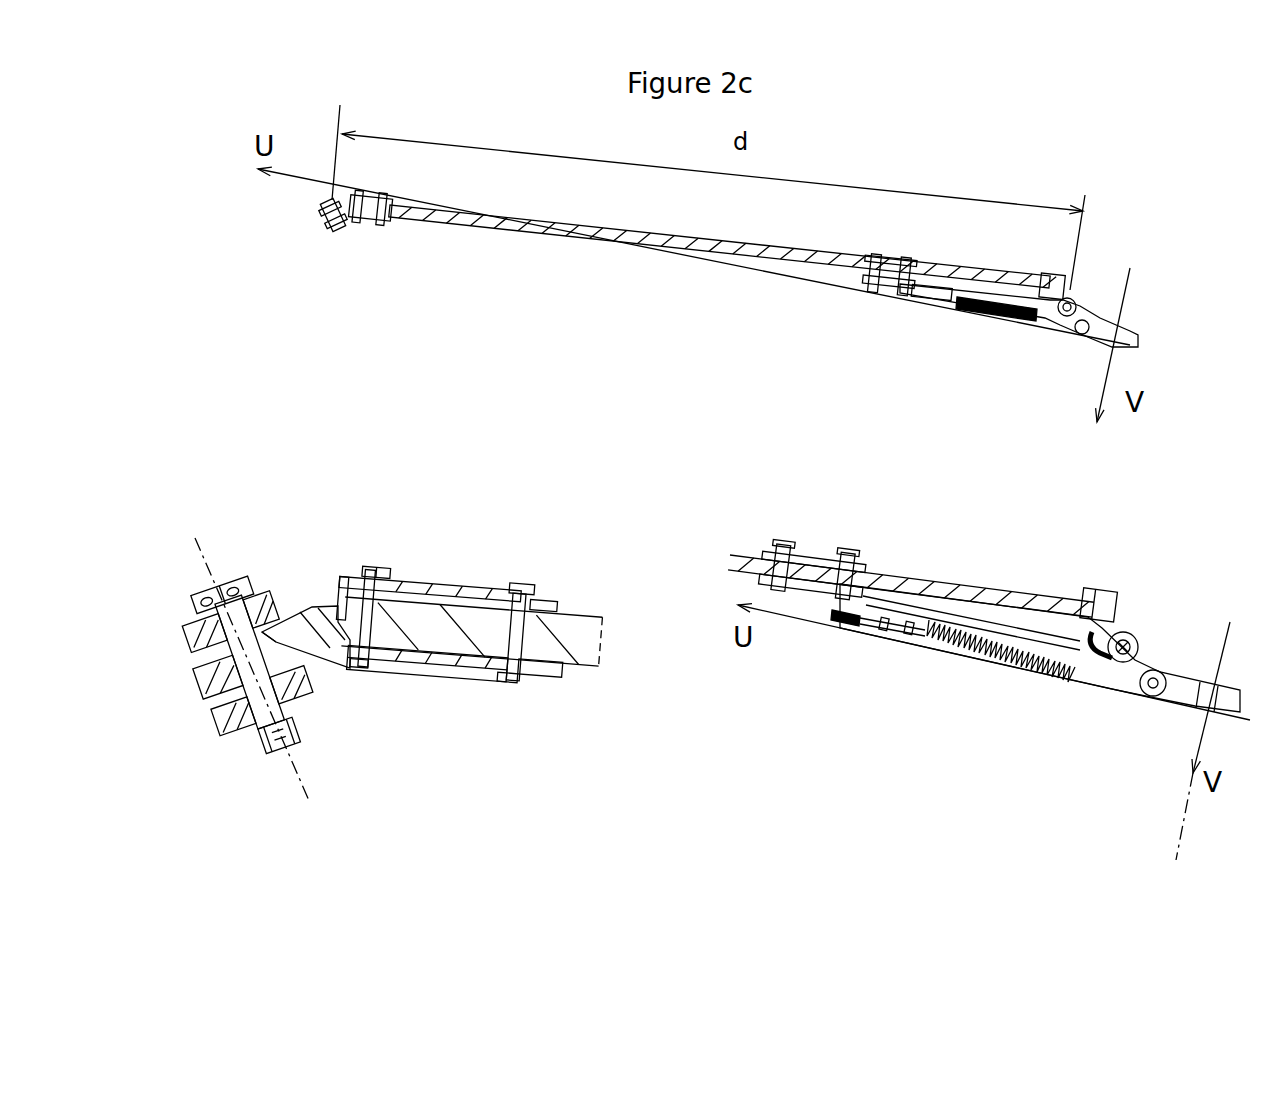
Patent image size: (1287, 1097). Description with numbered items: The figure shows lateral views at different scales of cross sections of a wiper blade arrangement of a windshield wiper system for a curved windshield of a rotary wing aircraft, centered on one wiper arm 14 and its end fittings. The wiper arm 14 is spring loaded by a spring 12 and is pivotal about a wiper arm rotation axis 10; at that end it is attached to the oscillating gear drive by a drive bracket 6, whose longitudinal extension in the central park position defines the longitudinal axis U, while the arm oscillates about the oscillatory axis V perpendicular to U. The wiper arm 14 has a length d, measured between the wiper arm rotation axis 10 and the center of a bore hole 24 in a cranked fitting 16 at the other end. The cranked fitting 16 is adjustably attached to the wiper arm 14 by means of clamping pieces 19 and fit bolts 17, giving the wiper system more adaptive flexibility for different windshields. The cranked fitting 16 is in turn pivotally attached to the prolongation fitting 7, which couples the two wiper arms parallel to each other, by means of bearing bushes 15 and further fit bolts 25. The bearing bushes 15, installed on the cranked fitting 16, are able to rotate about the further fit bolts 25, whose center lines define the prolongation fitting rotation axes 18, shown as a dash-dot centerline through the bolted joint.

The drive bracket 6 is at (1135, 675).
The prolongation fitting 7 is at (227, 737).
The wiper arm rotation axis 10 is at (1052, 312).
The spring 12 is at (1010, 672).
The wiper arm 14 is at (632, 232).
The bearing bushes 15 is at (283, 630).
The cranked fitting 16 is at (320, 647).
The fit bolts 17 is at (370, 613).
The prolongation fitting rotation axes 18 is at (195, 537).
The clamping pieces 19 is at (455, 673).
The center of the bore hole on the cranked fitting 24 is at (327, 220).
The further fit bolts 25 is at (240, 577).